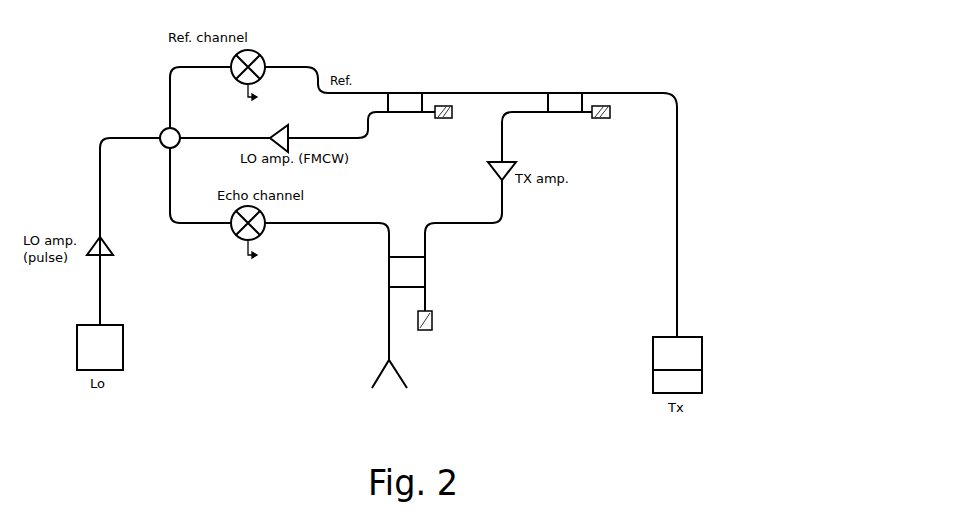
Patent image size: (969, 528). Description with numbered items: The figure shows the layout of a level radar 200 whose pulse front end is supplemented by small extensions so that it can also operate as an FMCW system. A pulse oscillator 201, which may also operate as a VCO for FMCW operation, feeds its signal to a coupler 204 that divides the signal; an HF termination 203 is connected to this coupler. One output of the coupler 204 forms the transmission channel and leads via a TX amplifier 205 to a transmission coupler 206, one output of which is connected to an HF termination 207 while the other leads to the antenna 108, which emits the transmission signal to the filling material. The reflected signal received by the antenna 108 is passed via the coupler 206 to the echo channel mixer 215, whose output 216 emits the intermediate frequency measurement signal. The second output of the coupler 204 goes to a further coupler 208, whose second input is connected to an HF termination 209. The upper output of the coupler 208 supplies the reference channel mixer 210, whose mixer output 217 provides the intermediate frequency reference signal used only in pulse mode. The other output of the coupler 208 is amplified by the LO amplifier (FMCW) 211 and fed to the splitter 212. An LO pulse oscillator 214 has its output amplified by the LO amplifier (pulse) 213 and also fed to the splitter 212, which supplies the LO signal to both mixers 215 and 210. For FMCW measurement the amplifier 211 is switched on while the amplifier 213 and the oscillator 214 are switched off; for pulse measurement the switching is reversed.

The level radar 200 is at (727, 127).
The pulse oscillator 201 is at (702, 350).
The HF termination 203 is at (603, 105).
The coupler 204 is at (567, 93).
The TX amplifier 205 is at (488, 172).
The transmission coupler 206 is at (417, 271).
The HF termination 207 is at (432, 318).
The further coupler 208 is at (403, 93).
The HF termination 209 is at (440, 120).
The reference channel mixer 210 is at (265, 55).
The LO amplifier (FMCW) 211 is at (268, 130).
The splitter 212 is at (162, 130).
The LO amplifier (pulse) 213 is at (97, 238).
The LO pulse oscillator 214 is at (123, 352).
The mixer 215 is at (233, 238).
The output 216 is at (277, 270).
The mixer output 217 is at (272, 108).
The antenna 108 is at (400, 373).